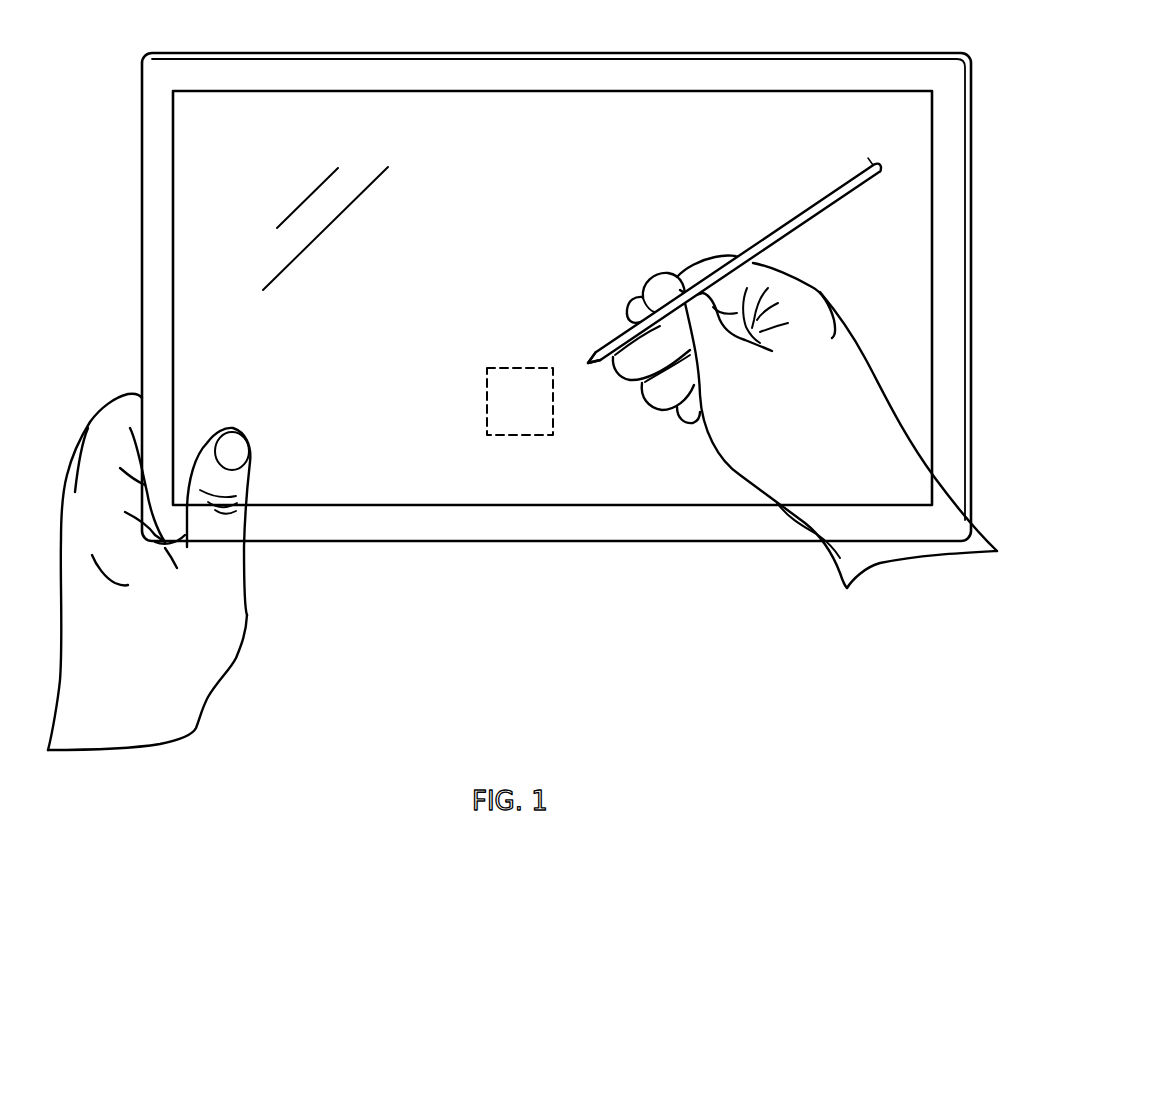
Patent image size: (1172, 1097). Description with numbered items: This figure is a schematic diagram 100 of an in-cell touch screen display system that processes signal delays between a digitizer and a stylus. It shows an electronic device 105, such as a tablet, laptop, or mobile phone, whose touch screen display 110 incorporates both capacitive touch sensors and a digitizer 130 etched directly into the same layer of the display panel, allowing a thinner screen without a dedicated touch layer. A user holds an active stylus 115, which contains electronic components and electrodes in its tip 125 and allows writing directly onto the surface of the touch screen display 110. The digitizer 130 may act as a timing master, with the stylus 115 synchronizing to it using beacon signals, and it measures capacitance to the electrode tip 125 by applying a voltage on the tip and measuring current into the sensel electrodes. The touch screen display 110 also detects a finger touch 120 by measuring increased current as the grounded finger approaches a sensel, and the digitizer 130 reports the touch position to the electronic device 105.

The schematic diagram 100 is at (591, 417).
The electronic device 105 is at (436, 542).
The touch screen display 110 is at (479, 153).
The stylus 115 is at (846, 172).
The finger touch 120 is at (249, 443).
The tip 125 is at (588, 362).
The digitizer 130 is at (537, 430).